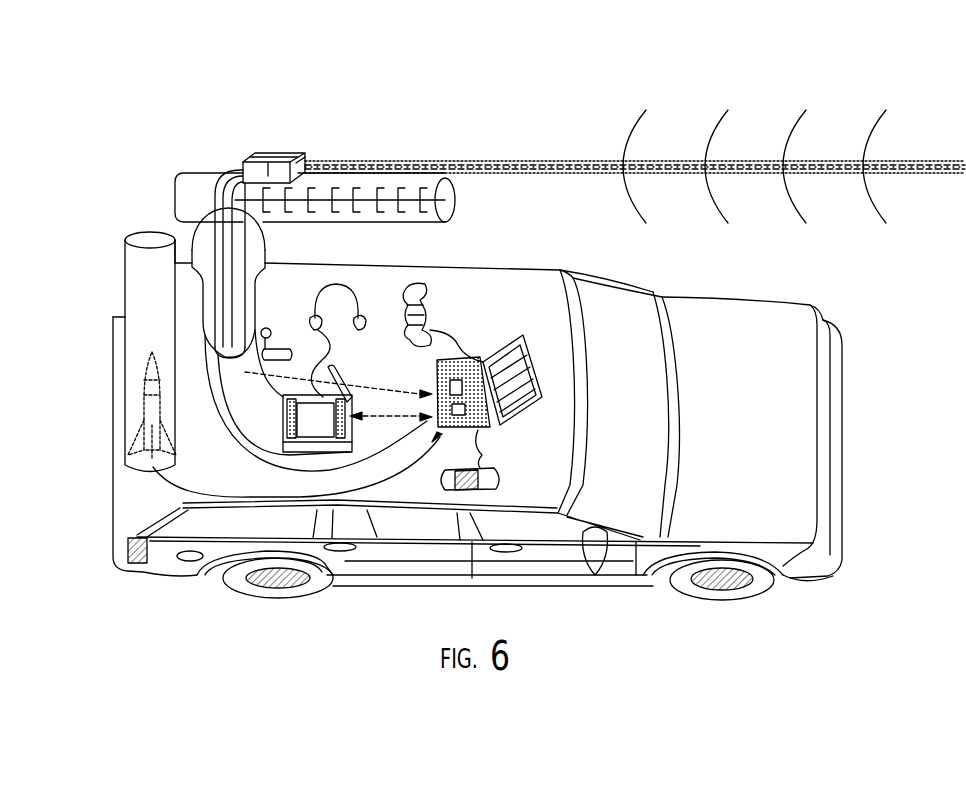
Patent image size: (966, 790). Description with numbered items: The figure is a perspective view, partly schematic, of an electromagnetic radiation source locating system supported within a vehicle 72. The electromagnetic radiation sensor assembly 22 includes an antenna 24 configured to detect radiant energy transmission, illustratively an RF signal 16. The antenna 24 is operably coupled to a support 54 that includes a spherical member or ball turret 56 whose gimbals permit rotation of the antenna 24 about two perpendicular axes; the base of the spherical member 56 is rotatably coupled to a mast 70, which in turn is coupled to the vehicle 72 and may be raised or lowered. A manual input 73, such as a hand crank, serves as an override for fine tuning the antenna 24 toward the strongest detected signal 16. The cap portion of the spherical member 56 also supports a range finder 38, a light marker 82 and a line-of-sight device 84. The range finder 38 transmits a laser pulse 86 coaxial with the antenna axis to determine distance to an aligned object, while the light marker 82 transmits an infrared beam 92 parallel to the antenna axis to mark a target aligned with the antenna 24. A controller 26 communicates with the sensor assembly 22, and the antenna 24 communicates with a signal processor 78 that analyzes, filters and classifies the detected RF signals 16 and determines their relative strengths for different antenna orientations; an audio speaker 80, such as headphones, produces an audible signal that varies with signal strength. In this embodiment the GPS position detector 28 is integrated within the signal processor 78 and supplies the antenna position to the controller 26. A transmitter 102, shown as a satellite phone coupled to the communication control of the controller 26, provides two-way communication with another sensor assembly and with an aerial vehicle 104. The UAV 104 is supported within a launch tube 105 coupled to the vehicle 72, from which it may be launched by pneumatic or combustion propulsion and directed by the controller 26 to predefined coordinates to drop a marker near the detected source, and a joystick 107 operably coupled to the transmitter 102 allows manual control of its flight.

The RF signal 16 is at (787, 140).
The electromagnetic radiation sensor assembly 22 is at (370, 115).
The antenna 24 is at (183, 173).
The controller 26 is at (502, 353).
The position detector 28 is at (350, 385).
The range finder 38 is at (288, 153).
The support 54 is at (266, 294).
The spherical member 56 is at (188, 232).
The mast 70 is at (266, 250).
The vehicle 72 is at (790, 433).
The manual input 73 is at (282, 351).
The signal processor 78 is at (285, 447).
The audio speaker 80 is at (358, 302).
The light marker 82 is at (247, 157).
The line-of-sight device 84 is at (267, 153).
The laser pulse 86 is at (930, 160).
The infrared beam 92 is at (906, 172).
The transmitter 102 is at (500, 467).
The aerial vehicle 104 is at (138, 430).
The launch tube 105 is at (132, 266).
The joystick 107 is at (430, 300).